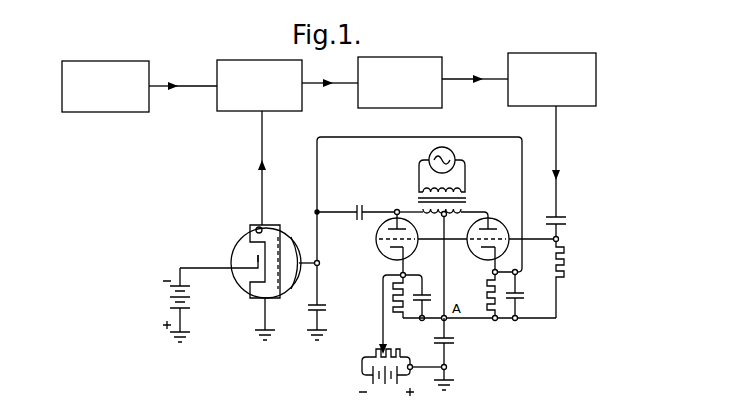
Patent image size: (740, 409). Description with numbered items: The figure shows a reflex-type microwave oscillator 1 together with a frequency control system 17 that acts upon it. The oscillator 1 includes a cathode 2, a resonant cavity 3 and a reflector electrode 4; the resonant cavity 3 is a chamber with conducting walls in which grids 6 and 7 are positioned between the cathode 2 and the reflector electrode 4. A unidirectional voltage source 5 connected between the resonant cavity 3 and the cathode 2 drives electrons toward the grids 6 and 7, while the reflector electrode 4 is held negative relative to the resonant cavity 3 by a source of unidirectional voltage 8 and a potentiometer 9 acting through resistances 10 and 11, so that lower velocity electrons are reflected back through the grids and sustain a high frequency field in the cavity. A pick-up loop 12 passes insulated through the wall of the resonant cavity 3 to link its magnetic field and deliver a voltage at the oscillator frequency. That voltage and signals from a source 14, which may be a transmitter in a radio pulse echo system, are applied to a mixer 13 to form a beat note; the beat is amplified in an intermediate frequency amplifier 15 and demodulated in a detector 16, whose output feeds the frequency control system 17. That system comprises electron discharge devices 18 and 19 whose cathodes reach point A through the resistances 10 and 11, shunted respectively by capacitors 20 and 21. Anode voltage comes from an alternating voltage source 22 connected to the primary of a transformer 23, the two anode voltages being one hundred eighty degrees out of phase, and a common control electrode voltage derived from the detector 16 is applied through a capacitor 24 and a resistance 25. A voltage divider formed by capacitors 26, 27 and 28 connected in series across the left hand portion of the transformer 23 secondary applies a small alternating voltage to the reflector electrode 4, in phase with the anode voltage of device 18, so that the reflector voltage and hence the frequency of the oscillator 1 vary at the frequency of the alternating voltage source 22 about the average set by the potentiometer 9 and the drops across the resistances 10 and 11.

The microwave oscillator 1 is at (212, 241).
The cathode 2 is at (252, 266).
The resonant cavity 3 is at (278, 225).
The reflector electrode 4 is at (284, 262).
The unidirectional voltage source 5 is at (170, 299).
The grid 6 is at (258, 257).
The grid 7 is at (288, 282).
The source of unidirectional voltage 8 is at (382, 389).
The potentiometer 9 is at (379, 347).
The resistance 10 is at (397, 304).
The resistance 11 is at (489, 293).
The pick-up loop 12 is at (256, 228).
The mixer 13 is at (257, 60).
The source 14 is at (107, 61).
The intermediate frequency amplifier 15 is at (399, 57).
The detector 16 is at (550, 53).
The frequency control system 17 is at (499, 344).
The electron discharge device 18 is at (376, 242).
The electron discharge device 19 is at (499, 224).
The capacitor 20 is at (426, 298).
The capacitor 21 is at (524, 296).
The alternating voltage source 22 is at (455, 152).
The transformer 23 is at (476, 201).
The capacitor 24 is at (567, 221).
The resistance 25 is at (565, 264).
The capacitor 26 is at (358, 204).
The capacitor 27 is at (328, 308).
The capacitor 28 is at (456, 341).